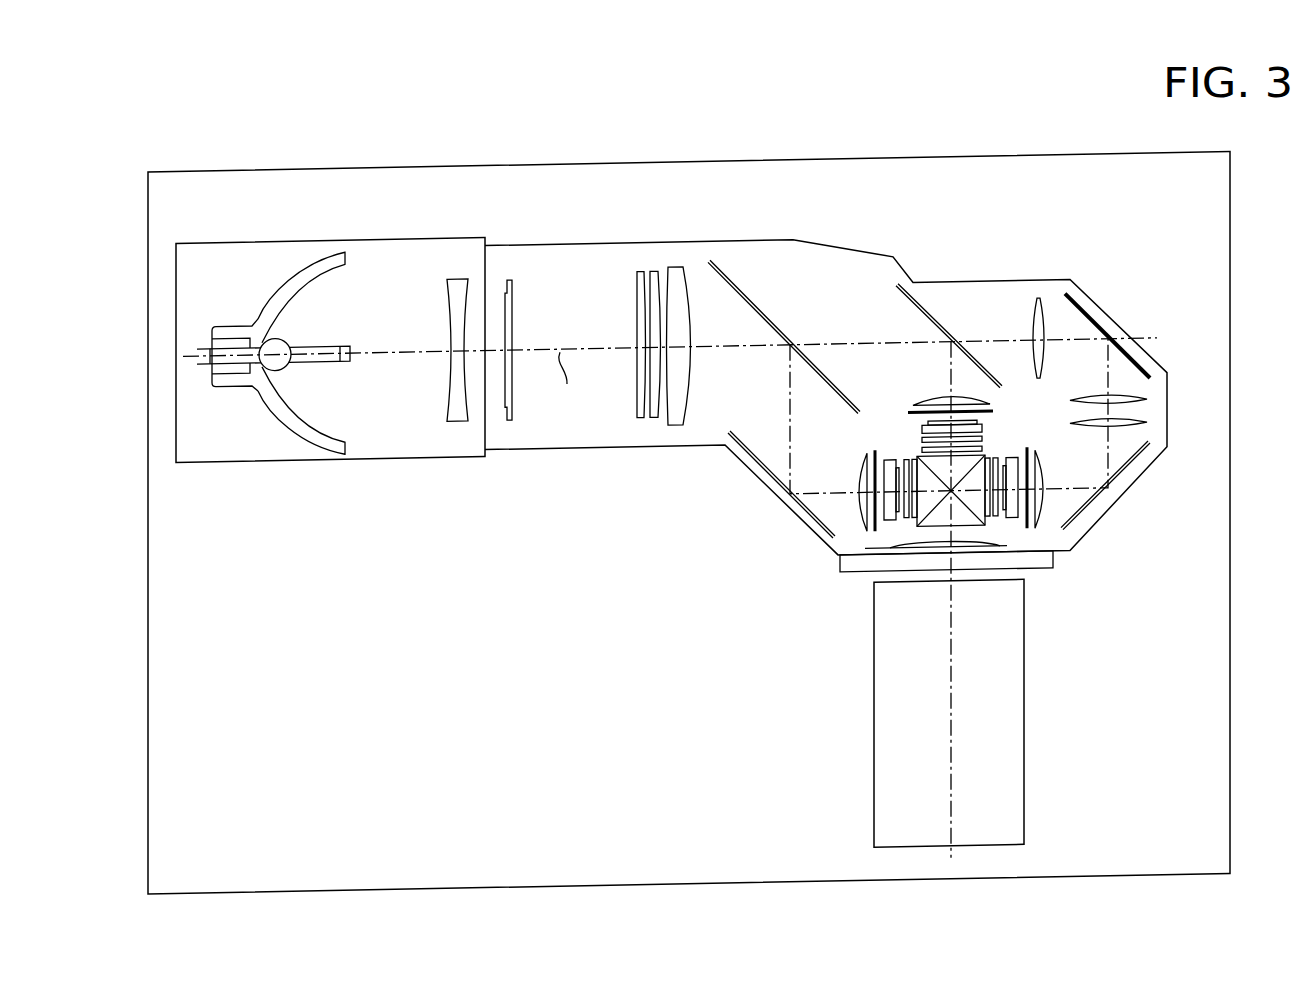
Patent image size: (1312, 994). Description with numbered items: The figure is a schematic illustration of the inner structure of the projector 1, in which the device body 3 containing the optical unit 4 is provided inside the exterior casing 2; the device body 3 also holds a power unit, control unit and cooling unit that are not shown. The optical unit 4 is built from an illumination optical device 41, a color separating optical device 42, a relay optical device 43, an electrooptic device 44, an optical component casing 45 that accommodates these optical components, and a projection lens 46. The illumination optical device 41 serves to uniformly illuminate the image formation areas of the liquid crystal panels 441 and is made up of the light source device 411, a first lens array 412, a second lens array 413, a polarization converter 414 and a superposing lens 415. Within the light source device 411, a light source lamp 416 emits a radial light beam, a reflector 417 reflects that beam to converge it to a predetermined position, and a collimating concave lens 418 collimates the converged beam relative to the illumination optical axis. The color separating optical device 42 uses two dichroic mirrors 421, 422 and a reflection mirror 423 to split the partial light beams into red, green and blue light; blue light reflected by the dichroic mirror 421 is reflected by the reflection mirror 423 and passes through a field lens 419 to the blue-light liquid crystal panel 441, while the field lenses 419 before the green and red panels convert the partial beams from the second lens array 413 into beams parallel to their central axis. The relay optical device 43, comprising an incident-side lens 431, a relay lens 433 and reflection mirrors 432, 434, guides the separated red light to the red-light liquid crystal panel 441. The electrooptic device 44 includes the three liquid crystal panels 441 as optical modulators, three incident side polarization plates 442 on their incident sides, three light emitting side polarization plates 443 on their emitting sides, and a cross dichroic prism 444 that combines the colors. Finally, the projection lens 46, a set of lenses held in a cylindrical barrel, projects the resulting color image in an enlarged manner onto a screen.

The projector 1 is at (1013, 151).
The exterior casing 2 is at (1231, 293).
The device body 3 is at (515, 675).
The optical unit 4 is at (645, 496).
The illumination optical device 41 is at (645, 217).
The light source device 411 is at (428, 137).
The first lens array 412 is at (512, 320).
The second lens array 413 is at (637, 281).
The polarization converter 414 is at (658, 281).
The superposing lens 415 is at (691, 309).
The light source lamp 416 is at (312, 347).
The reflector 417 is at (322, 262).
The collimating concave lens 418 is at (457, 285).
The field lens 419 is at (936, 414).
The color separating optical device 42 is at (846, 291).
The dichroic mirror 421 is at (744, 303).
The dichroic mirror 422 is at (935, 322).
The reflection mirror 423 is at (745, 446).
The relay optical device 43 is at (1118, 318).
The incident-side lens 431 is at (1040, 315).
The reflection mirror 432 is at (1137, 383).
The relay lens 433 is at (1147, 441).
The reflection mirror 434 is at (1140, 473).
The electrooptic device 44 is at (1040, 435).
The liquid crystal panel 441 is at (922, 444).
The incident side polarization plate 442 is at (910, 427).
The light emitting side polarization plate 443 is at (922, 455).
The cross dichroic prism 444 is at (958, 543).
The optical component casing 45 is at (965, 297).
The projection lens 46 is at (1024, 739).